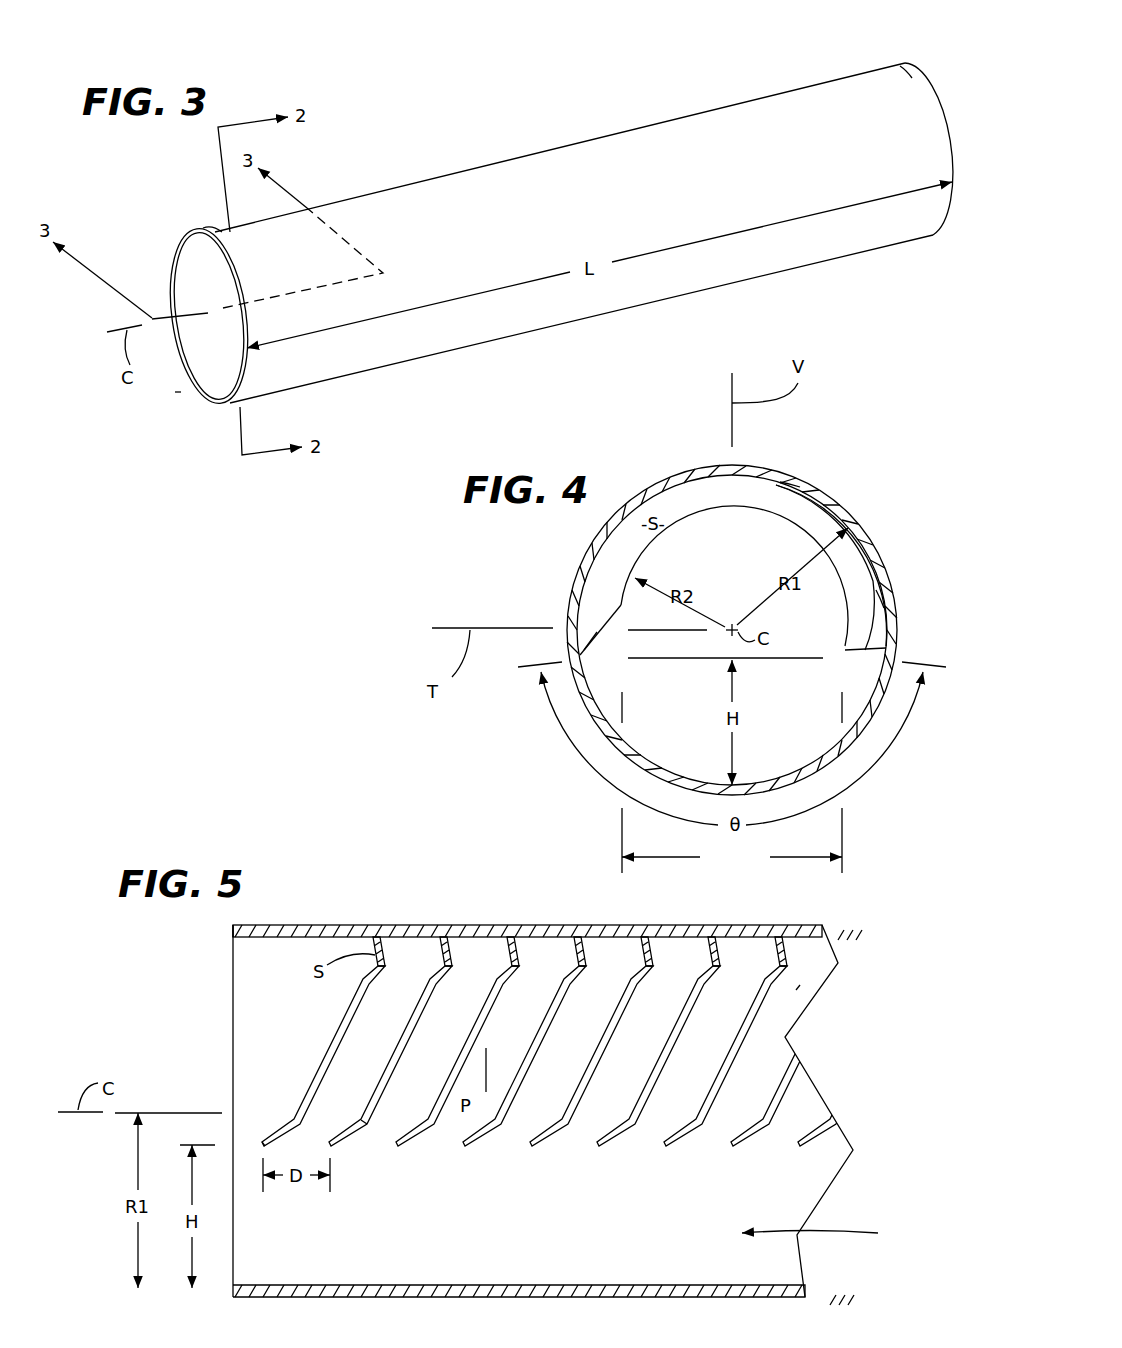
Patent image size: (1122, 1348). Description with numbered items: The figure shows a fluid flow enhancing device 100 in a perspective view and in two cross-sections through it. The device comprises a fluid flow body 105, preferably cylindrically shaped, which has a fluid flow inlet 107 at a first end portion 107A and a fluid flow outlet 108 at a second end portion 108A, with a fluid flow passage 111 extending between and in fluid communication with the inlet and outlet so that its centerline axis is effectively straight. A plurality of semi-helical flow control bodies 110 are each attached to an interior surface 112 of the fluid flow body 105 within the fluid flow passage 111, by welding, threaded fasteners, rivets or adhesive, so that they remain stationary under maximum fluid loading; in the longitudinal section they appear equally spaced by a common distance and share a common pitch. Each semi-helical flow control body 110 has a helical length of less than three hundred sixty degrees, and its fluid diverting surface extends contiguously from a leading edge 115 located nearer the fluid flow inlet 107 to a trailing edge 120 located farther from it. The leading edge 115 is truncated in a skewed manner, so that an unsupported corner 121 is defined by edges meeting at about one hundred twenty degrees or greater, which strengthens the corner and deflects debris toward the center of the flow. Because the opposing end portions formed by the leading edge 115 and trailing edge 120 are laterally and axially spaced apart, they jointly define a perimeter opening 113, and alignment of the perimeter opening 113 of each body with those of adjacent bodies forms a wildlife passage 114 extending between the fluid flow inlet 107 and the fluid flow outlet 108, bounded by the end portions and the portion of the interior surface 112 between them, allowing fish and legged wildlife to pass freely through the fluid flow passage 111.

In FIG. 3, the fluid flow enhancing device 100 is at (520, 128).
In FIG. 4, the fluid flow enhancing device 100 is at (630, 472).
In FIG. 5, the fluid flow enhancing device 100 is at (527, 900).
In FIG. 3, the fluid flow body 105 is at (727, 128).
In FIG. 4, the fluid flow body 105 is at (698, 472).
In FIG. 5, the fluid flow body 105 is at (322, 925).
In FIG. 3, the fluid flow inlet 107 is at (210, 390).
In FIG. 5, the fluid flow inlet 107 is at (238, 955).
In FIG. 3, the first end portion 107A is at (222, 232).
In FIG. 5, the first end portion 107A is at (235, 925).
In FIG. 3, the fluid flow outlet 108 is at (928, 72).
In FIG. 3, the second end portion 108A is at (897, 82).
In FIG. 4, the semi-helical flow control body 110 is at (760, 502).
In FIG. 5, the semi-helical flow control body 110 is at (323, 1062).
In FIG. 4, the fluid flow passage 111 is at (734, 576).
In FIG. 5, the fluid flow passage 111 is at (520, 1197).
In FIG. 3, the interior surface 112 is at (197, 257).
In FIG. 4, the interior surface 112 is at (793, 517).
In FIG. 5, the interior surface 112 is at (798, 988).
In FIG. 4, the perimeter opening 113 is at (732, 782).
In FIG. 4, the wildlife passage 114 is at (773, 703).
In FIG. 5, the wildlife passage 114 is at (827, 1233).
In FIG. 4, the leading edge 115 is at (595, 635).
In FIG. 5, the leading edge 115 is at (265, 1135).
In FIG. 4, the trailing edge 120 is at (882, 600).
In FIG. 4, the unsupported corner 121 is at (621, 605).
In FIG. 5, the unsupported corner 121 is at (362, 1127).